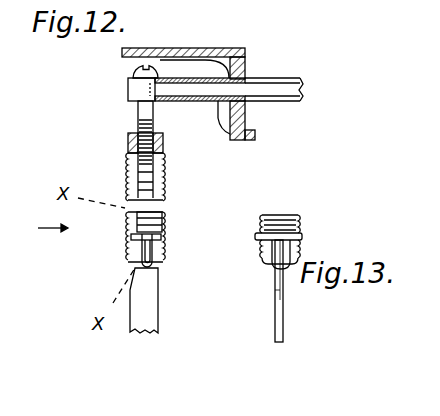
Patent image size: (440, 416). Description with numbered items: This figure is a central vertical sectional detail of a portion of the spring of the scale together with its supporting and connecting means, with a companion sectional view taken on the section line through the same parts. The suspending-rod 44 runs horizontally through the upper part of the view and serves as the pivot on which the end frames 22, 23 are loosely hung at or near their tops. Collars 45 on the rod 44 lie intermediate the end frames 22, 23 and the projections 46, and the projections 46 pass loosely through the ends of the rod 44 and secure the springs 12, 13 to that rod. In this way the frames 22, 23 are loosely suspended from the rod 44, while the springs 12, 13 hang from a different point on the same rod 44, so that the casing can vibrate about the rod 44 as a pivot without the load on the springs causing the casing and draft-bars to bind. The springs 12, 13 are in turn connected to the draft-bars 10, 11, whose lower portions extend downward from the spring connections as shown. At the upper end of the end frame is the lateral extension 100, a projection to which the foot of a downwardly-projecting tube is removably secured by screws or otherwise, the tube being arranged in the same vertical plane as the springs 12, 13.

In FIG. 12, the lateral extension 100 is at (186, 48).
In FIG. 12, the rod 44 is at (304, 90).
In FIG. 12, the collars 45 is at (202, 102).
In FIG. 12, the projections 46 is at (138, 108).
In FIG. 12, the end frame 22 is at (271, 120).
In FIG. 12, the end frame 23 is at (246, 127).
In FIG. 12, the spring 12 is at (163, 198).
In FIG. 13, the spring 12 is at (267, 238).
In FIG. 12, the spring 13 is at (165, 215).
In FIG. 13, the spring 13 is at (262, 220).
In FIG. 12, the draft-bar 10 is at (188, 300).
In FIG. 13, the draft-bar 10 is at (261, 291).
In FIG. 12, the draft-bar 11 is at (153, 308).
In FIG. 13, the draft-bar 11 is at (275, 301).